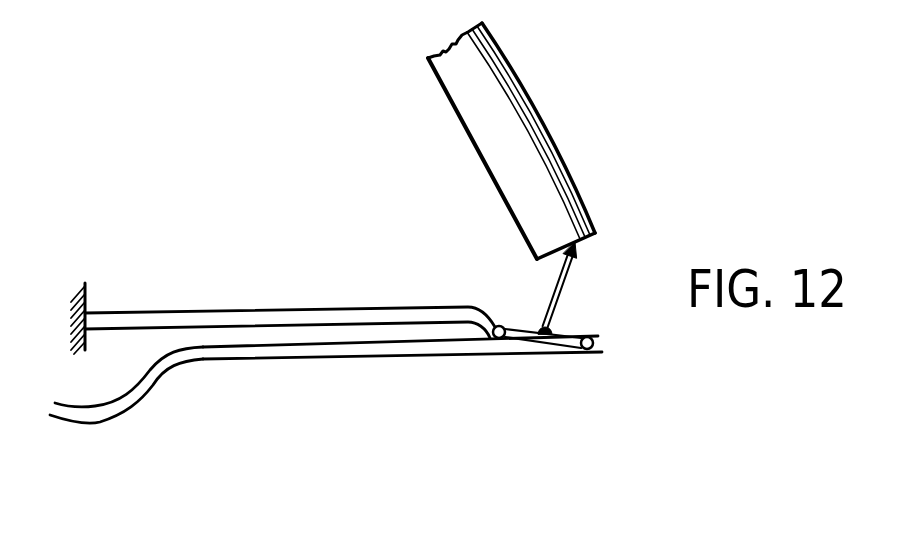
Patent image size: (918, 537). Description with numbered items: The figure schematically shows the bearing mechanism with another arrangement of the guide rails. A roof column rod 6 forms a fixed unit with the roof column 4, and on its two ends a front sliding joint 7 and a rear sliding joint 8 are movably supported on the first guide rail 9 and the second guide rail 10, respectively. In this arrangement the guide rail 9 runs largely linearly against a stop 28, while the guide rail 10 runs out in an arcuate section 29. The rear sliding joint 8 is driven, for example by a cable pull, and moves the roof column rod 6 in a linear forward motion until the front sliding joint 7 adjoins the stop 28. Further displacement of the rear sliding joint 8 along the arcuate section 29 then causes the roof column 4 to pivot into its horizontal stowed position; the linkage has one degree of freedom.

The roof column 4 is at (532, 152).
The roof column rod 6 is at (558, 350).
The front sliding joint 7 is at (502, 350).
The rear sliding joint 8 is at (588, 350).
The first guide rail 9 is at (262, 313).
The second guide rail 10 is at (337, 352).
The stop 28 is at (88, 298).
The arcuate section 29 is at (130, 438).